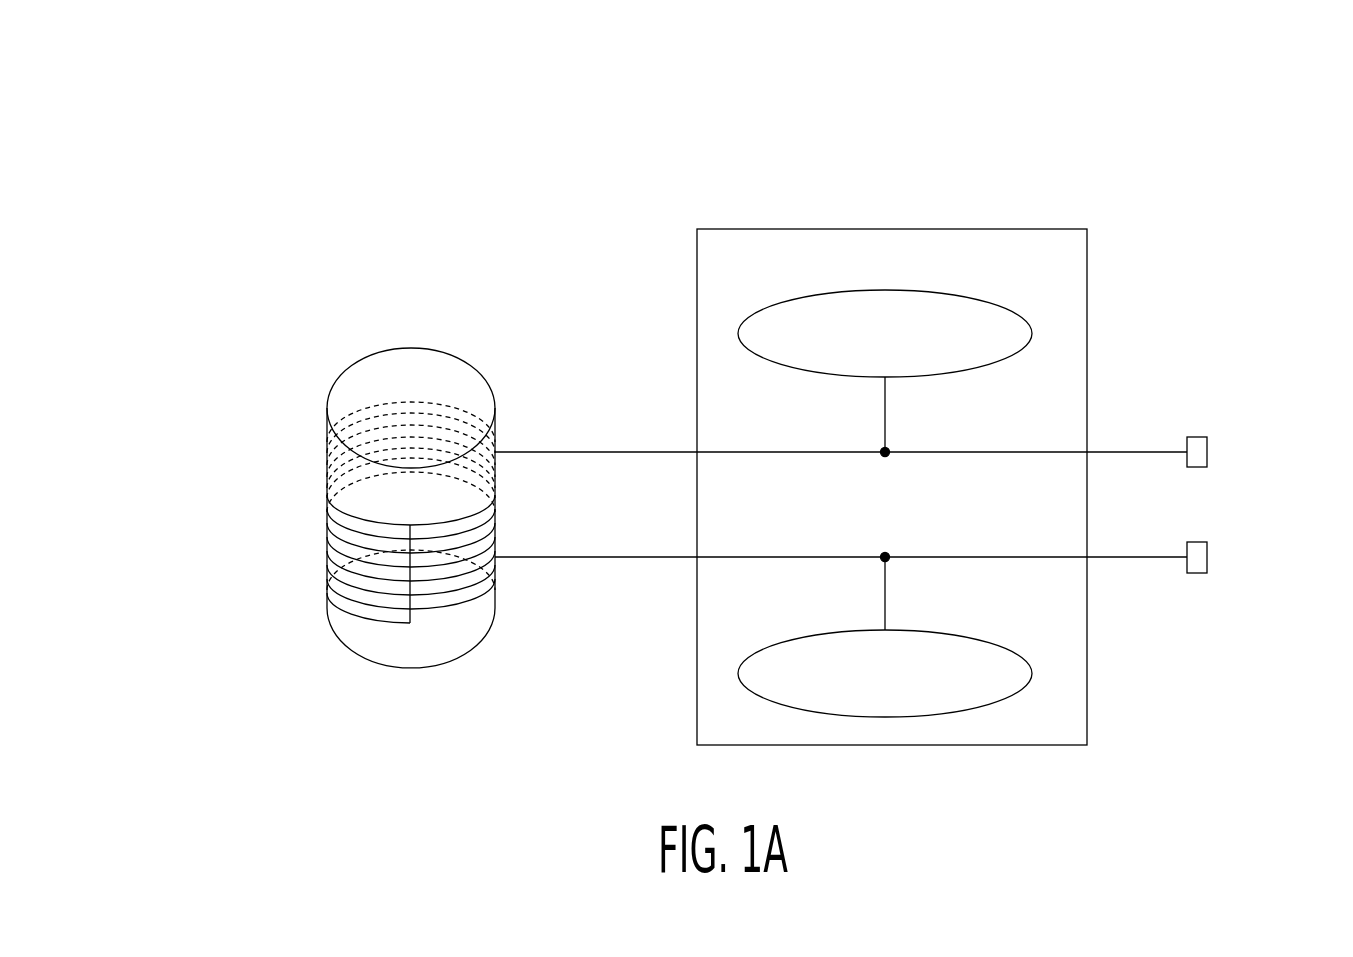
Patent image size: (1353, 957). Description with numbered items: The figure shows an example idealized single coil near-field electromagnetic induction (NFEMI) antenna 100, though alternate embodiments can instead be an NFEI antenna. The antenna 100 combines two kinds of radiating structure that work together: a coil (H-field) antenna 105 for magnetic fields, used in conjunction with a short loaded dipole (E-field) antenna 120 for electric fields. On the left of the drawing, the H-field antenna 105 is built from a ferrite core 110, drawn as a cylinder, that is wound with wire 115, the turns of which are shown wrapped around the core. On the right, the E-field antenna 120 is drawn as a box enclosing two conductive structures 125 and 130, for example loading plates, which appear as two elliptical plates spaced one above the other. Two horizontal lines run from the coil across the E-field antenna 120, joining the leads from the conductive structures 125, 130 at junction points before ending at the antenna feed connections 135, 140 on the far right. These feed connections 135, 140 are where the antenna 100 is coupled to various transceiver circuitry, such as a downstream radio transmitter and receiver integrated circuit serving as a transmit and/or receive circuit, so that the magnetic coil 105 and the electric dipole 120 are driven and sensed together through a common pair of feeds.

The near-field electromagnetic induction antenna 100 is at (266, 126).
The coil antenna 105 is at (304, 334).
The ferrite core 110 is at (333, 386).
The wire 115 is at (329, 520).
The short loaded dipole antenna 120 is at (790, 229).
The conductive structure 125 is at (1032, 322).
The conductive structure 130 is at (1032, 675).
The feed connection 135 is at (1207, 445).
The feed connection 140 is at (1207, 565).